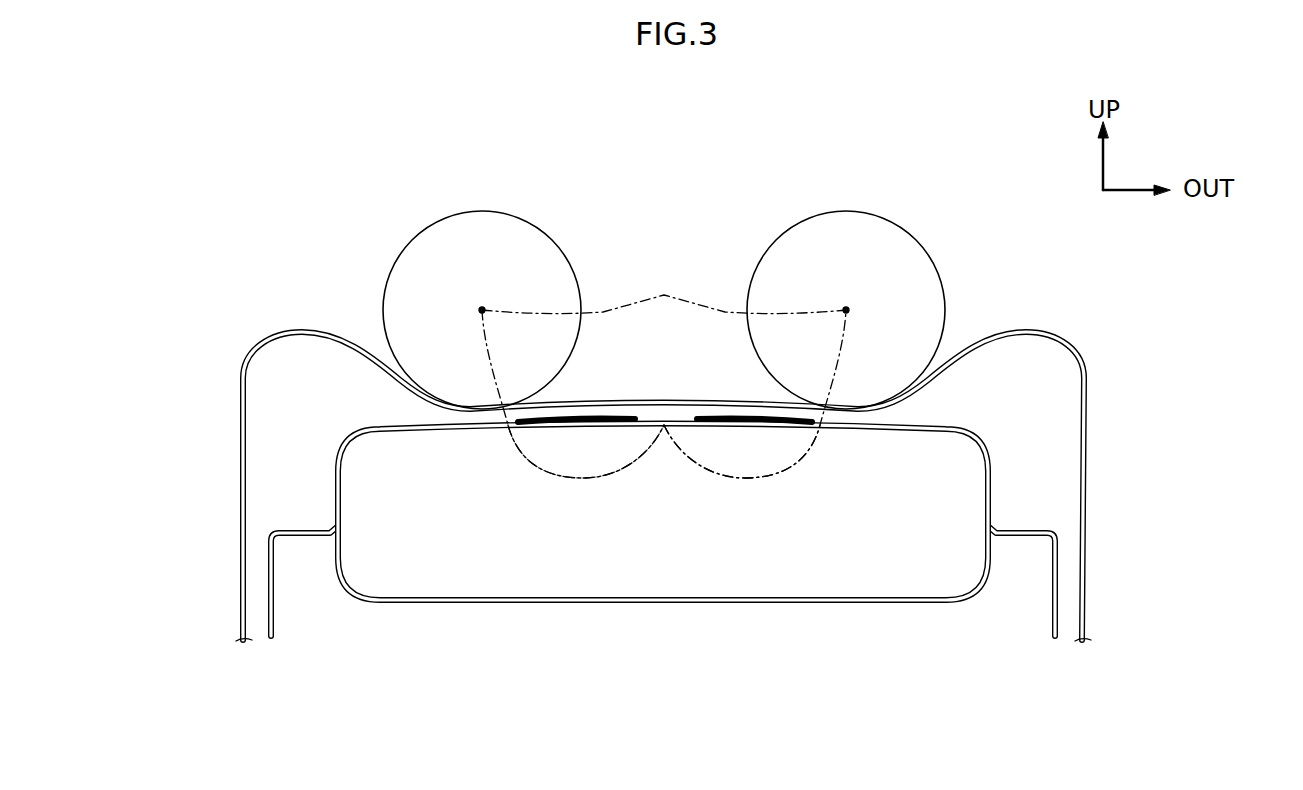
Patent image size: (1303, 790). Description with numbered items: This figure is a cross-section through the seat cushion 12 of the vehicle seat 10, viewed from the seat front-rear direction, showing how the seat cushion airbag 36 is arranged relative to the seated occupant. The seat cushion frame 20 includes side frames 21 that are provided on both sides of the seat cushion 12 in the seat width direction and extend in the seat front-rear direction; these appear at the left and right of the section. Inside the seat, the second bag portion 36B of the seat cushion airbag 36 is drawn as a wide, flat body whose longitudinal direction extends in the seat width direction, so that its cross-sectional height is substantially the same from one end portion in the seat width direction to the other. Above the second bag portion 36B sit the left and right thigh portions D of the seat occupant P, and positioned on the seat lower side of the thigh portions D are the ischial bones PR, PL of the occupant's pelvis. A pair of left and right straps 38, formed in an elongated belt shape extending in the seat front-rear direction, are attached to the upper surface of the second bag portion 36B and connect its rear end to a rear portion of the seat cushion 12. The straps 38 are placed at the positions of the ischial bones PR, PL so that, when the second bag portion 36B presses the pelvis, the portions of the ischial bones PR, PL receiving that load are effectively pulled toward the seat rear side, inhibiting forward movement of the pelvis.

The vehicle seat 10 is at (740, 486).
The seat cushion 12 is at (1088, 452).
The seat cushion frame 20 is at (642, 582).
The side frames 21 is at (268, 580).
The seat cushion airbag 36 is at (663, 574).
The second bag portion 36B is at (663, 604).
The straps 38 is at (577, 417).
The thigh portion D is at (423, 228).
The seat occupant P is at (855, 203).
The right ischial bone PR is at (580, 480).
The left ischial bone PL is at (735, 480).